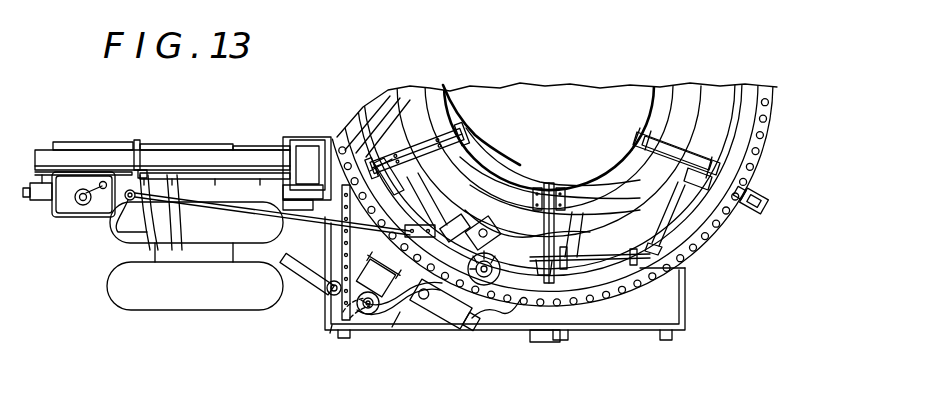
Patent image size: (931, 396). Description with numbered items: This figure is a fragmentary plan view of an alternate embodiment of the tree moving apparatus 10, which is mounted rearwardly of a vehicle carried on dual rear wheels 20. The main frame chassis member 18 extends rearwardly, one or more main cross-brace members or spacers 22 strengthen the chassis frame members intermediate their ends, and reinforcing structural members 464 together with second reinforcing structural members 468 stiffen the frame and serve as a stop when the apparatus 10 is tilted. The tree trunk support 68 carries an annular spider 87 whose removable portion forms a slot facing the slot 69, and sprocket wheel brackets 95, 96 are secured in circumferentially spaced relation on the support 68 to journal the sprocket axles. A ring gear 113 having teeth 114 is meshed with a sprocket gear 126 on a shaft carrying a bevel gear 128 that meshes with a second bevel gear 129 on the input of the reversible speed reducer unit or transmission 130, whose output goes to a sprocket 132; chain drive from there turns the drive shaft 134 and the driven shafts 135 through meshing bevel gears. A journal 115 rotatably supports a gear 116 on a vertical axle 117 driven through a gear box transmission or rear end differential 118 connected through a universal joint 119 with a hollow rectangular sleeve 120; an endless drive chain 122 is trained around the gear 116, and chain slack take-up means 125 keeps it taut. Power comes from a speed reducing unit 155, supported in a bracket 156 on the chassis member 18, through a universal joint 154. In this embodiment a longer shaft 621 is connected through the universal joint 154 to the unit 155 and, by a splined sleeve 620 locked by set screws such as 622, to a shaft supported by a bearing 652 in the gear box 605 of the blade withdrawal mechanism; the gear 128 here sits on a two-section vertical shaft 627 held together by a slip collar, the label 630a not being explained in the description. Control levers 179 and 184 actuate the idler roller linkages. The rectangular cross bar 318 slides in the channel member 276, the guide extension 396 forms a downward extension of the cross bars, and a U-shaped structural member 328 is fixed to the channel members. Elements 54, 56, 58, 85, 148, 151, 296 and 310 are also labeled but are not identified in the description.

The tree moving apparatus 10 is at (320, 327).
The main frame chassis member 18 is at (66, 150).
The dual rear wheels 20 is at (103, 283).
The main cross-brace member or spacer 22 is at (128, 148).
The base 54 is at (330, 333).
The foot 56 is at (670, 333).
The base frame 58 is at (690, 323).
The tree trunk support 68 is at (618, 163).
The slot 69 is at (648, 128).
The intermediate ring 85 is at (630, 223).
The annular spider 87 is at (684, 150).
The sprocket wheel bracket 95 is at (541, 181).
The sprocket wheel bracket 96 is at (558, 184).
The ring gear 113 is at (716, 250).
The teeth 114 is at (695, 254).
The journal 115 is at (376, 273).
The gear 116 is at (330, 312).
The vertical axle 117 is at (365, 325).
The gear box transmission or rear end differential 118 is at (372, 318).
The universal joint 119 is at (326, 289).
The hollow rectangular sleeve 120 is at (302, 264).
The endless drive chain 122 is at (392, 327).
The chain slack take-up means 125 is at (425, 322).
The sprocket gear 126 is at (480, 320).
The bevel gear 128 is at (502, 268).
The second bevel gear 129 is at (537, 170).
The reversible speed reducer unit or automobile transmission 130 is at (502, 184).
The sprocket 132 is at (498, 171).
The drive shaft 134 is at (384, 97).
The driven shaft 135 is at (667, 212).
The stop block 148 is at (760, 194).
The clamp 151 is at (752, 218).
The universal joint 154 is at (124, 198).
The speed reducing unit 155 is at (50, 210).
The bracket 156 is at (27, 175).
The control lever 179 is at (118, 225).
The manually operable control lever 184 is at (180, 225).
The channel member 276 is at (278, 184).
The mount 296 is at (530, 325).
The vertical bolted member 310 is at (286, 196).
The cross bar 318 is at (318, 134).
The U-shaped structural member 328 is at (272, 150).
The guide extension 396 is at (300, 140).
The reinforcing structural member 464 is at (157, 144).
The second reinforcing structural member 468 is at (235, 147).
The gear box 605 is at (488, 162).
The sleeve 620 is at (438, 188).
The shaft 621 is at (332, 229).
The set screw 622 is at (405, 234).
The vertical shaft 627 is at (497, 238).
The bearing 652 is at (475, 160).
The element 630a is at (636, 390).